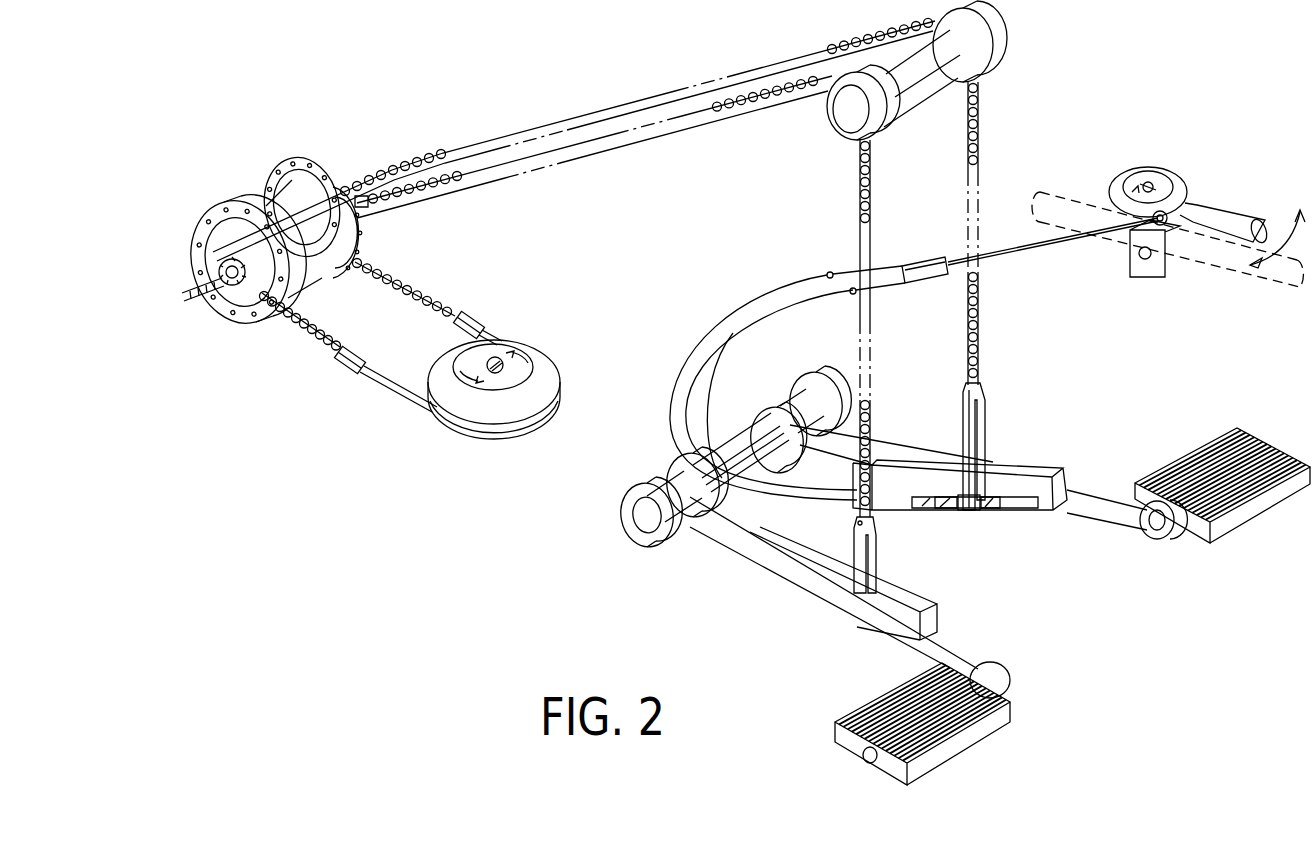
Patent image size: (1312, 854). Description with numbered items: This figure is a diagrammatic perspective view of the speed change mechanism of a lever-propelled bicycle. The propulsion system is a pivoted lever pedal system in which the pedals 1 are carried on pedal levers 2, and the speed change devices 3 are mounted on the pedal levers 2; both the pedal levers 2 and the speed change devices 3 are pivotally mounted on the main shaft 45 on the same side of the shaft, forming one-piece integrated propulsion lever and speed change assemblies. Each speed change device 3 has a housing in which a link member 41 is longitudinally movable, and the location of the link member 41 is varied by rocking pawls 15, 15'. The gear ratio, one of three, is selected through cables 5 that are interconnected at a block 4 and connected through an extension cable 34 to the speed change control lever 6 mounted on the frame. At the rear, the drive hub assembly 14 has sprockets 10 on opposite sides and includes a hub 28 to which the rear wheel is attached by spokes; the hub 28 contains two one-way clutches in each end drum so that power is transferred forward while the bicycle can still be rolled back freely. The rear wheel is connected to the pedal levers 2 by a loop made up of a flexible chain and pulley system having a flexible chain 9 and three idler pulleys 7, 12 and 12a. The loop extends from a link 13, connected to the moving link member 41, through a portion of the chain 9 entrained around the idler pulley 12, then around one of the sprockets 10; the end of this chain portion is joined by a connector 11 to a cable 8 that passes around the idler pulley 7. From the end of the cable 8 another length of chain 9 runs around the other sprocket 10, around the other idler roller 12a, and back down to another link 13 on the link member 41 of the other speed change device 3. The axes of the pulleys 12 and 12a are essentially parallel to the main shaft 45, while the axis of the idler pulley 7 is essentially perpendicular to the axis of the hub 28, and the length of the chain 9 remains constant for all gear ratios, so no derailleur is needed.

The pedal 1 is at (1272, 503).
The pedal lever 2 is at (770, 563).
The speed change device 3 is at (803, 598).
The block 4 is at (915, 265).
The cables 5 is at (784, 294).
The speed change control lever 6 is at (1178, 192).
The idler pulley 7 is at (484, 418).
The cable 8 is at (410, 396).
The drive chain 9 is at (650, 110).
The sprockets 10 is at (224, 290).
The connector 11 is at (352, 369).
The idler pulley 12 is at (850, 118).
The idler roller 12a is at (987, 42).
The link 13 is at (967, 430).
The drive hub assembly 14 is at (268, 152).
The rocking pawl 15 is at (935, 517).
The rocking pawl 15' is at (1000, 520).
The hub 28 is at (320, 183).
The extension cable 34 is at (1045, 242).
The link member 41 is at (969, 509).
The main shaft 45 is at (640, 517).